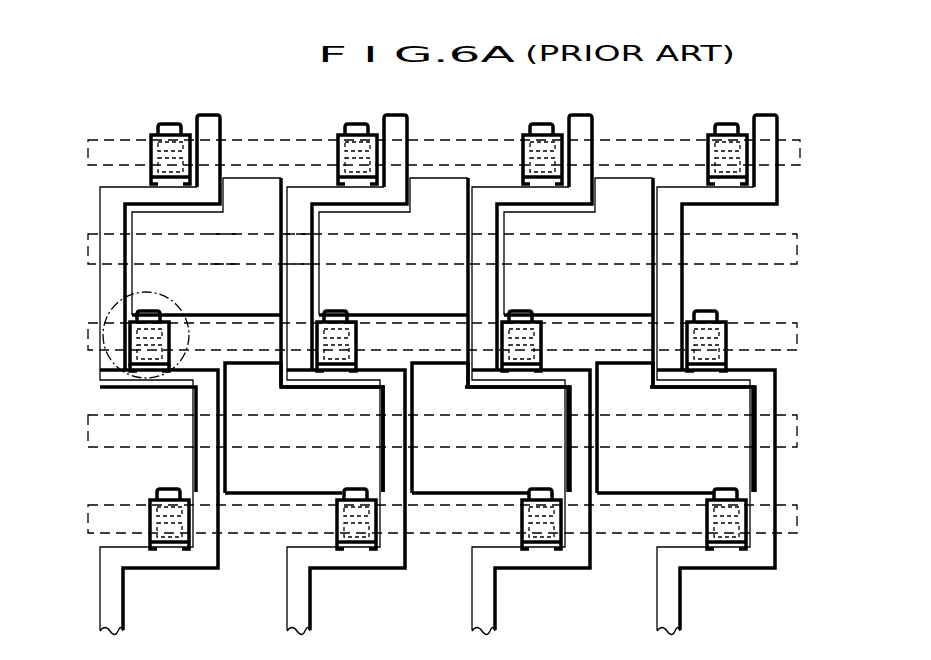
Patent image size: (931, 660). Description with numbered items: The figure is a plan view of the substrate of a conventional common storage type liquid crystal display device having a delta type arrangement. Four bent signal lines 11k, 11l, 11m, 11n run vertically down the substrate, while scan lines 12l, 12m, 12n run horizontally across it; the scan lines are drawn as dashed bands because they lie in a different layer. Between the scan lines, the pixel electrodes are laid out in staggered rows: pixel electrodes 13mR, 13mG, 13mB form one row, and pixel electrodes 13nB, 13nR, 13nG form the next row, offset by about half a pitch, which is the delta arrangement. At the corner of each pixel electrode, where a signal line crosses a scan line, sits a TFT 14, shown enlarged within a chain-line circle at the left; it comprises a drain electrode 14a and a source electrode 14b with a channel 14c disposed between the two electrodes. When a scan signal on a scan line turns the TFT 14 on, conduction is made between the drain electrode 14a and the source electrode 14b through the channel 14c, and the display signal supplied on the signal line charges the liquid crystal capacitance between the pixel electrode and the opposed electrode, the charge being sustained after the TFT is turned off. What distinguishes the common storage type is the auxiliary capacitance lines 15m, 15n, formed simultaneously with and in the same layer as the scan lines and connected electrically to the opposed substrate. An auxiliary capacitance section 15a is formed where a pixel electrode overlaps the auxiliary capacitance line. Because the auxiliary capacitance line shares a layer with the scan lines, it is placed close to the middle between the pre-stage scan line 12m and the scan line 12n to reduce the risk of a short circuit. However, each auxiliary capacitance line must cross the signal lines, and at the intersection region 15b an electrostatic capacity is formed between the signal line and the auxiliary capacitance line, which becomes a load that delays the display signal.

The signal line 11k is at (208, 120).
The signal line 11l is at (357, 354).
The signal line 11m is at (548, 354).
The signal line 11n is at (726, 354).
The scan line 12l is at (800, 153).
The pre-stage scan line 12m is at (797, 337).
The scan line 12n is at (797, 519).
The auxiliary capacitance line 15m is at (797, 249).
The auxiliary capacitance line 15n is at (797, 431).
The auxiliary capacitance section 15a is at (220, 256).
The intersection region 15b is at (300, 270).
The pixel electrode 13mR is at (258, 299).
The pixel electrode 13mG is at (393, 282).
The pixel electrode 13mB is at (578, 282).
The pixel electrode 13nB is at (318, 479).
The pixel electrode 13nR is at (491, 428).
The pixel electrode 13nG is at (676, 428).
The TFT 14 is at (152, 270).
The drain electrode 14a is at (150, 382).
The source electrode 14b is at (137, 310).
The channel 14c is at (130, 340).